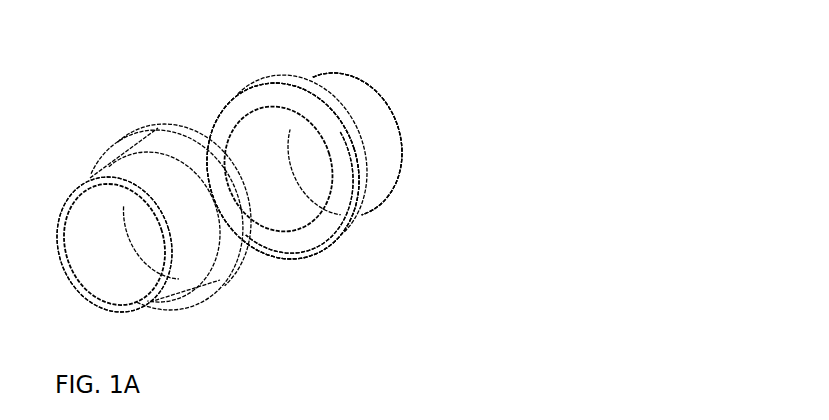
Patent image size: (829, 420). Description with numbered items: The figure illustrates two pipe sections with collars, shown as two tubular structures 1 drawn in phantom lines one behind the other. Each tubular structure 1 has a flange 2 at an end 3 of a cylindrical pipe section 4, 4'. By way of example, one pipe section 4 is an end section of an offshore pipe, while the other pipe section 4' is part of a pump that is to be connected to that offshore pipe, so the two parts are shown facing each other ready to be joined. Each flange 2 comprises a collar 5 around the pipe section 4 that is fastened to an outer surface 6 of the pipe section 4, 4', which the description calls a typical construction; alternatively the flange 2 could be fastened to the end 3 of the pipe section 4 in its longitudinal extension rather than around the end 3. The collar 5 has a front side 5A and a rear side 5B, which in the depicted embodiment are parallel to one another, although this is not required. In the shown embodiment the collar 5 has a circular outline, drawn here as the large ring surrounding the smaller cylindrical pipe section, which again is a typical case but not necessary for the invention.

The tubular structure 1 is at (446, 115).
The flange 2 is at (343, 270).
The end 3 is at (277, 238).
The pipe section 4 is at (293, 144).
The pipe section 4' is at (140, 212).
The collar 5 is at (355, 220).
The front side 5A is at (228, 108).
The rear side 5B is at (194, 297).
The outer surface 6 is at (387, 148).